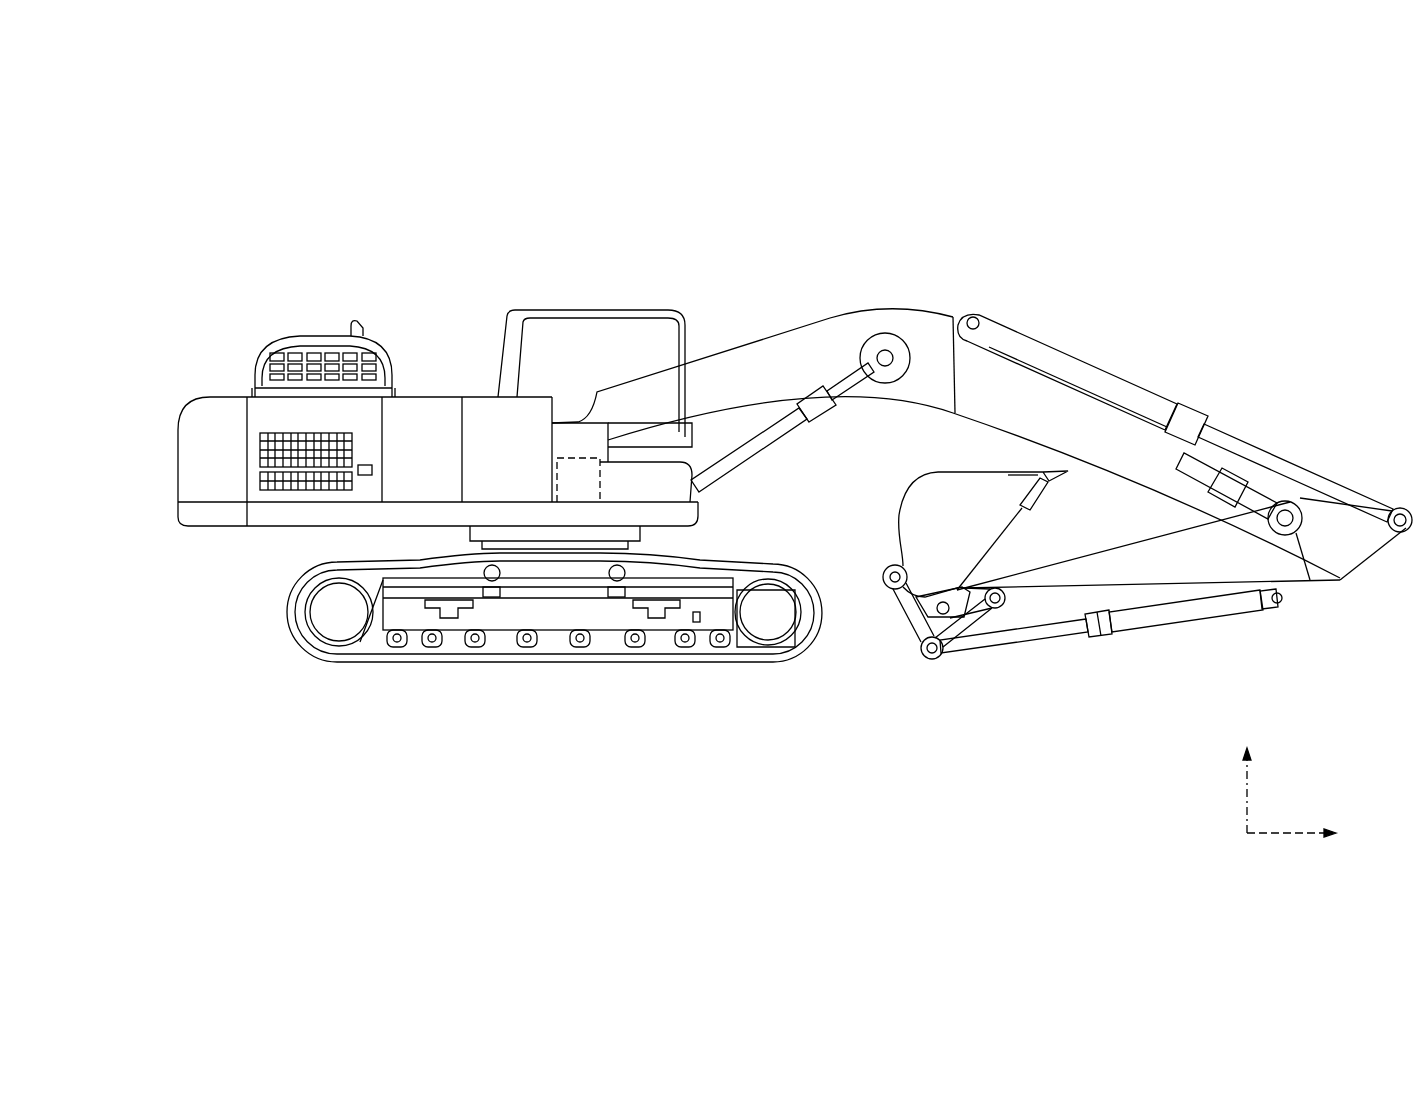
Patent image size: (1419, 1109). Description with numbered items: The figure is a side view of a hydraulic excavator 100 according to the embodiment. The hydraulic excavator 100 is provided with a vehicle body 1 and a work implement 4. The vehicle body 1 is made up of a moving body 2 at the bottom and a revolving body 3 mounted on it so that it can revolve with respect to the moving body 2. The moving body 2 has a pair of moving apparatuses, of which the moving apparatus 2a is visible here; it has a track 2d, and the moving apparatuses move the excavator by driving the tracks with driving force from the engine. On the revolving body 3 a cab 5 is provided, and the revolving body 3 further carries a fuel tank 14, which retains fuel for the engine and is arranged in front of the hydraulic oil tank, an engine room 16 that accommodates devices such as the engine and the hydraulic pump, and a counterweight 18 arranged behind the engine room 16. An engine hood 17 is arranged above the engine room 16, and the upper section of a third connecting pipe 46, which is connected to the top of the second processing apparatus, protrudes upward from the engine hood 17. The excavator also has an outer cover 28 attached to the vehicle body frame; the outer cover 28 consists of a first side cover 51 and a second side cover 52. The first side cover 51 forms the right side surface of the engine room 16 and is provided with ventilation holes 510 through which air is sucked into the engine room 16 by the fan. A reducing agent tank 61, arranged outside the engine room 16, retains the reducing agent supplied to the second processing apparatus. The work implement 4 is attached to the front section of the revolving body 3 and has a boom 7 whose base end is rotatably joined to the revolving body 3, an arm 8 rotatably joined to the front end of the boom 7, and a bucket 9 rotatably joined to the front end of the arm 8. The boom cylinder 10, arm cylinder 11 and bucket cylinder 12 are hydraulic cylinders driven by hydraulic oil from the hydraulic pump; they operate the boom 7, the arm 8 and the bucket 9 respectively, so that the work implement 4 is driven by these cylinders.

The hydraulic excavator 100 is at (775, 245).
The vehicle body 1 is at (545, 243).
The moving body 2 is at (468, 670).
The moving apparatus 2a is at (328, 612).
The track 2d is at (778, 562).
The revolving body 3 is at (438, 280).
The work implement 4 is at (1180, 378).
The cab 5 is at (648, 308).
The boom 7 is at (788, 345).
The arm 8 is at (1247, 563).
The bucket 9 is at (930, 506).
The boom cylinder 10 is at (806, 415).
The arm cylinder 11 is at (1090, 372).
The bucket cylinder 12 is at (1146, 620).
The fuel tank 14 is at (498, 430).
The engine room 16 is at (313, 415).
The engine hood 17 is at (282, 352).
The counterweight 18 is at (221, 437).
The outer cover 28 is at (372, 178).
The third connecting pipe 46 is at (355, 327).
The first side cover 51 is at (333, 418).
The second side cover 52 is at (422, 423).
The ventilation holes 510 is at (268, 452).
The reducing agent tank 61 is at (598, 478).